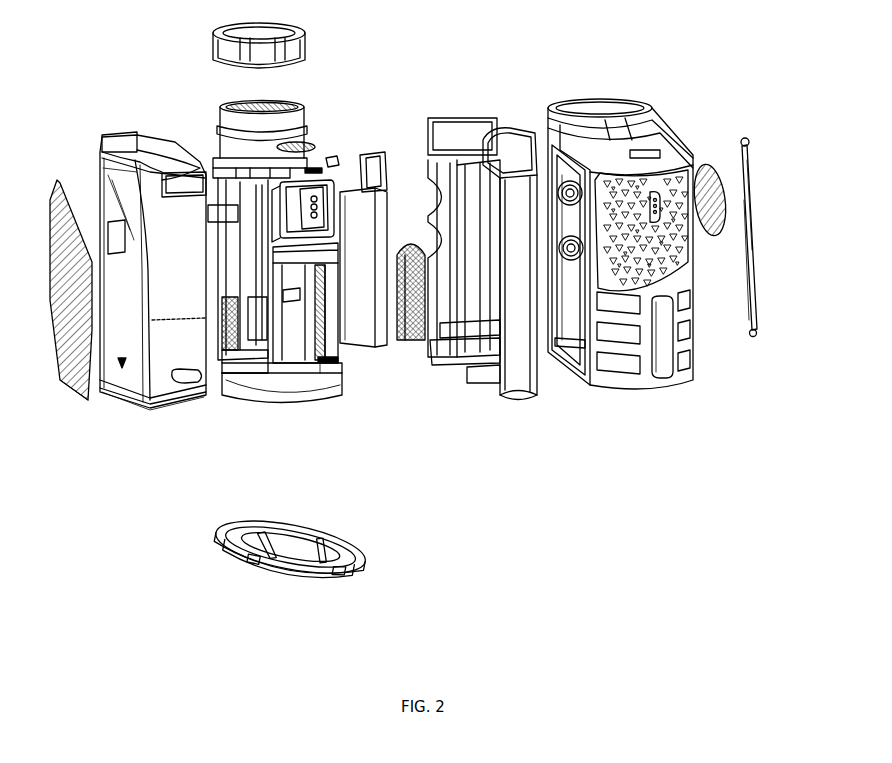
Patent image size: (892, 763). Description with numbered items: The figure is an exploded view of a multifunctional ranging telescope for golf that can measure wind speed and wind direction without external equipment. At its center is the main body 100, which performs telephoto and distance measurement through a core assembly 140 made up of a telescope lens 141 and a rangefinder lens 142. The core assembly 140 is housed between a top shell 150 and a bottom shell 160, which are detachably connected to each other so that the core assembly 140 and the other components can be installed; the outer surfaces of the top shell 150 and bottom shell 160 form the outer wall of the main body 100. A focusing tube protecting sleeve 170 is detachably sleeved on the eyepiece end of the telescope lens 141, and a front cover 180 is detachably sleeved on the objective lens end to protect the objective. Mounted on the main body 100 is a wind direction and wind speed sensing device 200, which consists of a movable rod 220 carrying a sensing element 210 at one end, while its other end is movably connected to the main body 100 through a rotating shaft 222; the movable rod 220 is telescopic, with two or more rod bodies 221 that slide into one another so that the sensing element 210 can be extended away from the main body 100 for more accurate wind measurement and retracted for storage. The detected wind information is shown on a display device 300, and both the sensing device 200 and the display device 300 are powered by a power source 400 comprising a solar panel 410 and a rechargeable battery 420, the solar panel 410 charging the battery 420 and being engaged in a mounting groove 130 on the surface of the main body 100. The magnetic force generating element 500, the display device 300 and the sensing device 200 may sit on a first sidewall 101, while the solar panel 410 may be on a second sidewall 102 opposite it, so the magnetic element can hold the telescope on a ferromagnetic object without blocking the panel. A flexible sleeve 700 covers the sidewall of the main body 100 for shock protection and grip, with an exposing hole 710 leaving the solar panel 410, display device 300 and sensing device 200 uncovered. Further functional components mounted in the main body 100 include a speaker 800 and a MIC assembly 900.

The main body 100 is at (100, 160).
The first sidewall 101 is at (533, 350).
The second sidewall 102 is at (103, 168).
The mounting groove 130 is at (122, 366).
The core assembly 140 is at (395, 505).
The telescope lens 141 is at (235, 395).
The rangefinder lens 142 is at (320, 392).
The top shell 150 is at (185, 393).
The bottom shell 160 is at (527, 355).
The focusing tube protecting sleeve 170 is at (300, 47).
The front cover 180 is at (275, 578).
The wind direction and wind speed sensing device 200 is at (804, 247).
The sensing element 210 is at (750, 144).
The movable rod 220 is at (752, 152).
The rod bodies 221 is at (755, 265).
The rotating shaft 222 is at (757, 335).
The display device 300 is at (708, 178).
The power source 400 is at (57, 310).
The solar panel 410 is at (62, 395).
The battery 420 is at (410, 340).
The magnetic force generating element 500 is at (360, 305).
The flexible sleeve 700 is at (650, 350).
The exposing hole 710 is at (601, 348).
The speaker 800 is at (305, 148).
The MIC assembly 900 is at (341, 160).